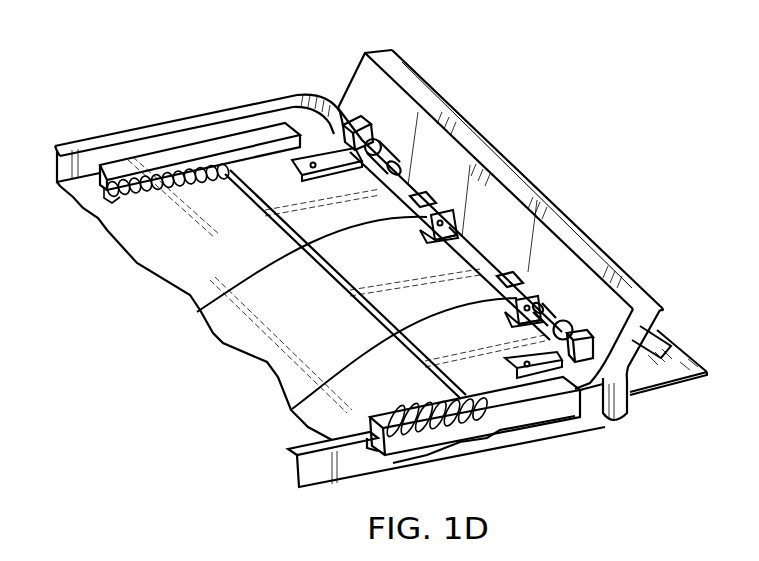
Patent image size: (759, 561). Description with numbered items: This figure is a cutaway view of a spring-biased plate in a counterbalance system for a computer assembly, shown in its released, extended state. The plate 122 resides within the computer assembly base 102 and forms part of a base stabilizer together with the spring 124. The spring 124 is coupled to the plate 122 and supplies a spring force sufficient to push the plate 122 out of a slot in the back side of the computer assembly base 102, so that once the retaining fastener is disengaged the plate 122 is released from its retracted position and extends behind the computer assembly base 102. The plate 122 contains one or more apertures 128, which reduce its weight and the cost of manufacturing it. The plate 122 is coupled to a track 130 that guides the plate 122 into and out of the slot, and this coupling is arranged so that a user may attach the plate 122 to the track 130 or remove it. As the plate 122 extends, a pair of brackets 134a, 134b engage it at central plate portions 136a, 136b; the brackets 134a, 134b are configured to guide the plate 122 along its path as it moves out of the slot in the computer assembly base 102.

The computer assembly base 102 is at (527, 437).
The plate 122 is at (420, 234).
The spring 124 is at (112, 200).
The apertures 128 is at (403, 188).
The track 130 is at (257, 137).
The bracket 134a is at (430, 208).
The bracket 134b is at (522, 300).
The central plate portion 136a is at (197, 312).
The central plate portion 136b is at (292, 409).